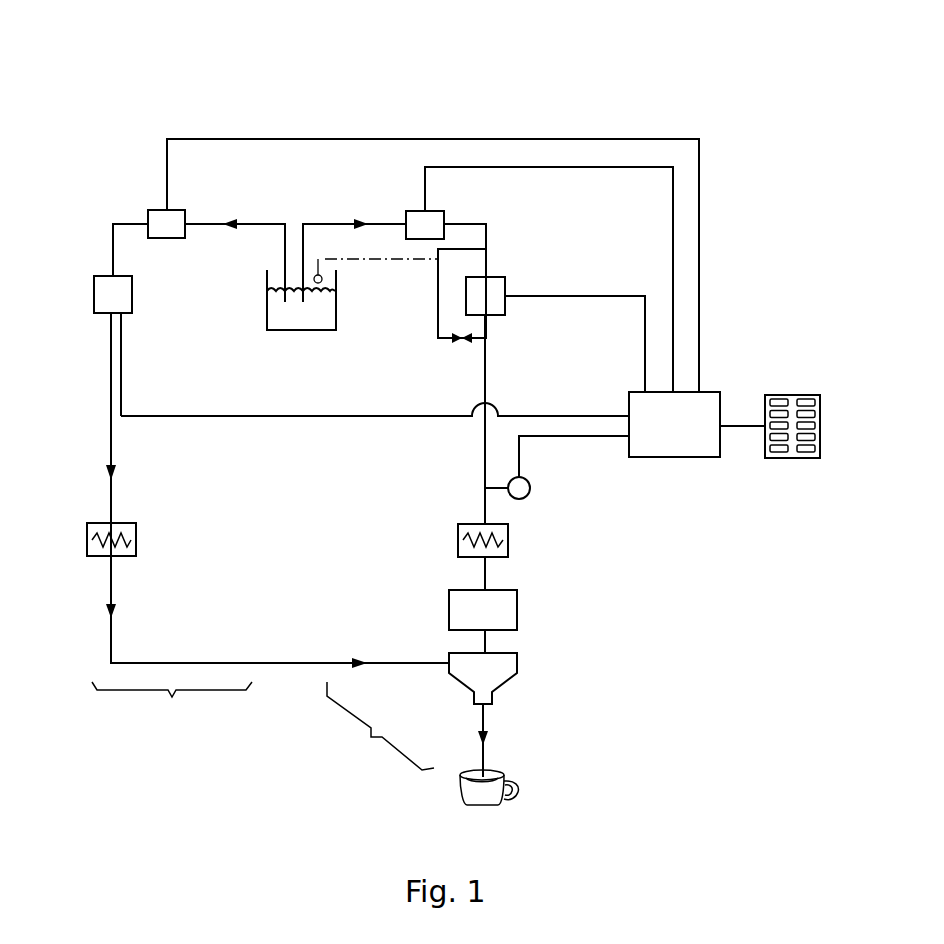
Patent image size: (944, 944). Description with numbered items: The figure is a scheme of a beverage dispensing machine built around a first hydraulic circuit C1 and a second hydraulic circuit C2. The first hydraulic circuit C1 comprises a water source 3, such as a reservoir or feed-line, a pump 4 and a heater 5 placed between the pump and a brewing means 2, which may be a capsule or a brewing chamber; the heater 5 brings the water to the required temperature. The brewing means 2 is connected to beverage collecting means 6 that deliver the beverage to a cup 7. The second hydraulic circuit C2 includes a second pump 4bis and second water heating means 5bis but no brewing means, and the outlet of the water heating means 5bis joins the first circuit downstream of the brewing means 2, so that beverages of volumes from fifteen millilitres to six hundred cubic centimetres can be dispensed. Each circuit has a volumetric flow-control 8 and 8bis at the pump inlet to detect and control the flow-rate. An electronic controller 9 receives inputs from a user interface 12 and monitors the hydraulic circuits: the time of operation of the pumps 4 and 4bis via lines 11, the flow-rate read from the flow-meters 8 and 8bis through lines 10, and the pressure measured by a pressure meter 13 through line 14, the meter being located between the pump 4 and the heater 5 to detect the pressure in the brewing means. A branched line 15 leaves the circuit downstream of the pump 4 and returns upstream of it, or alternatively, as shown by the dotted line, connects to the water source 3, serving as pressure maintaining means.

The brewing means 2 is at (449, 610).
The water source 3 is at (267, 311).
The pump 4 is at (497, 288).
The second pump 4bis is at (132, 300).
The heater 5 is at (458, 535).
The second water heating means 5bis is at (136, 533).
The beverage collecting means 6 is at (510, 663).
The cup 7 is at (517, 790).
The volumetric flow-control 8 is at (413, 219).
The second volumetric flow-control 8bis is at (158, 222).
The electronic controller 9 is at (697, 448).
The lines 10 is at (674, 263).
The lines 11 is at (582, 296).
The user interface 12 is at (812, 458).
The pressure meter 13 is at (529, 496).
The line 14 is at (613, 437).
The branched line 15 is at (438, 310).
The first hydraulic circuit C1 is at (362, 744).
The second hydraulic circuit C2 is at (172, 714).